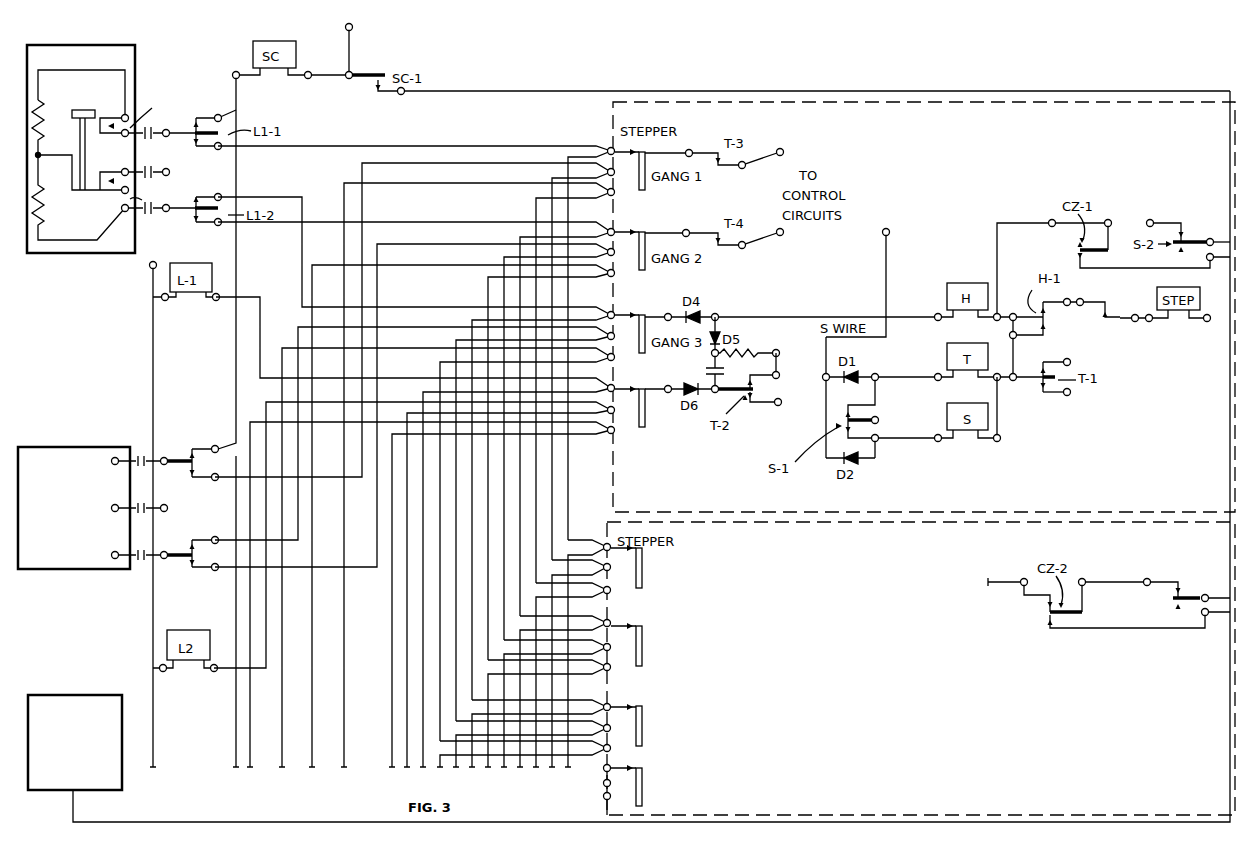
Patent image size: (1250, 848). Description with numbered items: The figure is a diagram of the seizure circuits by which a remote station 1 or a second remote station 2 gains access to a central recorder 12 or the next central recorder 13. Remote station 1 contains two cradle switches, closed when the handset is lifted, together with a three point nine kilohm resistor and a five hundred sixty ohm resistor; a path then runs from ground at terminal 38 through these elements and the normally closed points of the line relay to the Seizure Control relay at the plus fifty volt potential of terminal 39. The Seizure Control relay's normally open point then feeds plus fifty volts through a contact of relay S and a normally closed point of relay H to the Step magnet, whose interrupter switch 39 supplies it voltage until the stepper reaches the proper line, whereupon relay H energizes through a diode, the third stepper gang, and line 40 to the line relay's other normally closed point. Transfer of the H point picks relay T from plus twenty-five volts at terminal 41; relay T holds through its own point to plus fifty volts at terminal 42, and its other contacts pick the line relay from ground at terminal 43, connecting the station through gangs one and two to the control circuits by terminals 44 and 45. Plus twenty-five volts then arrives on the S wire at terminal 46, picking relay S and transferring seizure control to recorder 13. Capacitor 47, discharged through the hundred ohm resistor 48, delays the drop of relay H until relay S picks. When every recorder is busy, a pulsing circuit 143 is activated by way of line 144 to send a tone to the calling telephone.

The remote station 1 is at (52, 255).
The remote station 2 is at (52, 572).
The central recorder 12 is at (1214, 509).
The central recorder 13 is at (1218, 810).
The ground terminal 38 is at (178, 170).
The potential terminal / interrupter switch 39 is at (346, 31).
The line 40 is at (400, 311).
The +25 volt terminal 41 is at (878, 416).
The +50 volt terminal 42 is at (1066, 397).
The ground terminal 43 is at (782, 400).
The control circuit terminal 44 is at (784, 149).
The control circuit terminal 45 is at (784, 240).
The +25 volt terminal 46 is at (885, 228).
The capacitor 47 is at (706, 371).
The 100 ohm resistor 48 is at (770, 350).
The pulsing circuit 143 is at (57, 695).
The line 144 is at (190, 822).